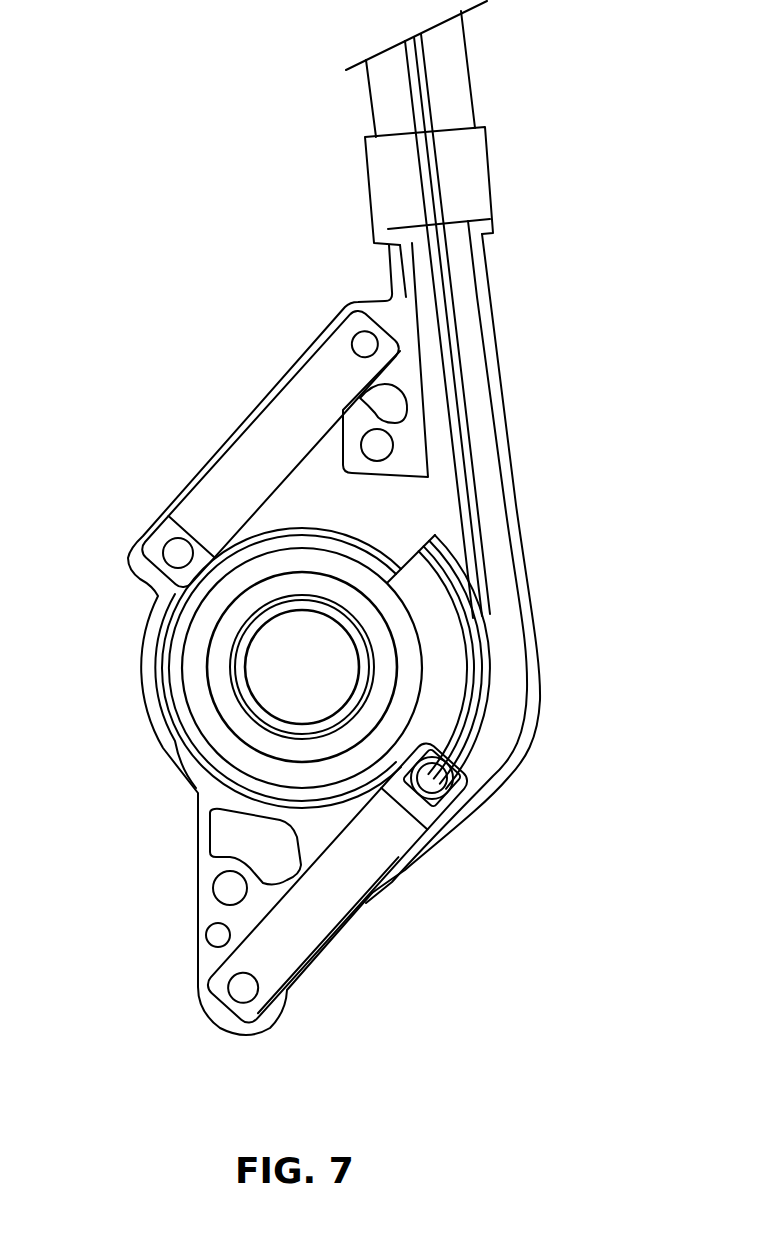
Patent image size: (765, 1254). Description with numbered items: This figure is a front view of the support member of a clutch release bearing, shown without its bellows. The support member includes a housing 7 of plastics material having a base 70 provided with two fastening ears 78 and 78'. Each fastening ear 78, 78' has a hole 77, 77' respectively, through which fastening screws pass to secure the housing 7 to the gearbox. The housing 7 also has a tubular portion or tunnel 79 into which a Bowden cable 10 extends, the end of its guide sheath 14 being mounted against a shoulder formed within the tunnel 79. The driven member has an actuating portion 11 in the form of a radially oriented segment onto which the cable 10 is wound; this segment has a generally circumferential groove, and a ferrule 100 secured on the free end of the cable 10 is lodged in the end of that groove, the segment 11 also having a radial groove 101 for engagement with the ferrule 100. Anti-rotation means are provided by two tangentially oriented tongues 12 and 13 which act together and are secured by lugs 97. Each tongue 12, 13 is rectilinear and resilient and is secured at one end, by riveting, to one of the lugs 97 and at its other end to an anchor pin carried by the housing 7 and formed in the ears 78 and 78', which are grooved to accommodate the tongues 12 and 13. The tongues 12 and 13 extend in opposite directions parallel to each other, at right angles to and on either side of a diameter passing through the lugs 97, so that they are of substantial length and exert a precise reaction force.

The housing 7 is at (552, 734).
The Bowden cable 10 is at (468, 452).
The actuating portion 11 is at (438, 604).
The tongue 12 is at (240, 457).
The tongue 13 is at (360, 883).
The guide sheath 14 is at (468, 80).
The base 70 is at (447, 493).
The hole 77 is at (186, 908).
The hole 77' is at (349, 357).
The fastening ear 78 is at (255, 640).
The fastening ear 78' is at (328, 360).
The tunnel 79 is at (487, 253).
The lug 97 is at (173, 530).
The ferrule 100 is at (480, 790).
The radial groove 101 is at (463, 807).